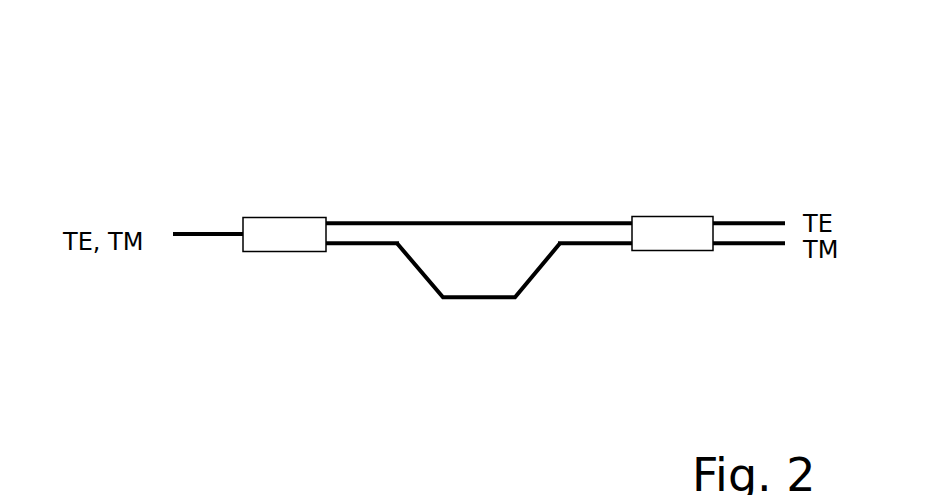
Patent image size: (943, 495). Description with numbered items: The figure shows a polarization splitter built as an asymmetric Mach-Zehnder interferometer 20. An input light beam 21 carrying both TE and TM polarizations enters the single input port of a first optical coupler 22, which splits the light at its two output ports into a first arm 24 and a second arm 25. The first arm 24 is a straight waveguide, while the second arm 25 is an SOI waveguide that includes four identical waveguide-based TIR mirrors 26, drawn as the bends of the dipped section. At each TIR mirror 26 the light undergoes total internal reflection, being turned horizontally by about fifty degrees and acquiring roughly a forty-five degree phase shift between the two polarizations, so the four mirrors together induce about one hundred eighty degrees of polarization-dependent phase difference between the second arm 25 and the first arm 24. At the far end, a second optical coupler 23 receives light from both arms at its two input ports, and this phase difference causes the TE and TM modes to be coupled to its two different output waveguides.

The asymmetric Mach-Zehnder interferometer 20 is at (479, 228).
The input light beam 21 is at (210, 232).
The first optical coupler 22 is at (300, 232).
The second optical coupler 23 is at (677, 228).
The first arm 24 is at (490, 221).
The second arm 25 is at (378, 246).
The TIR mirrors 26 is at (560, 246).